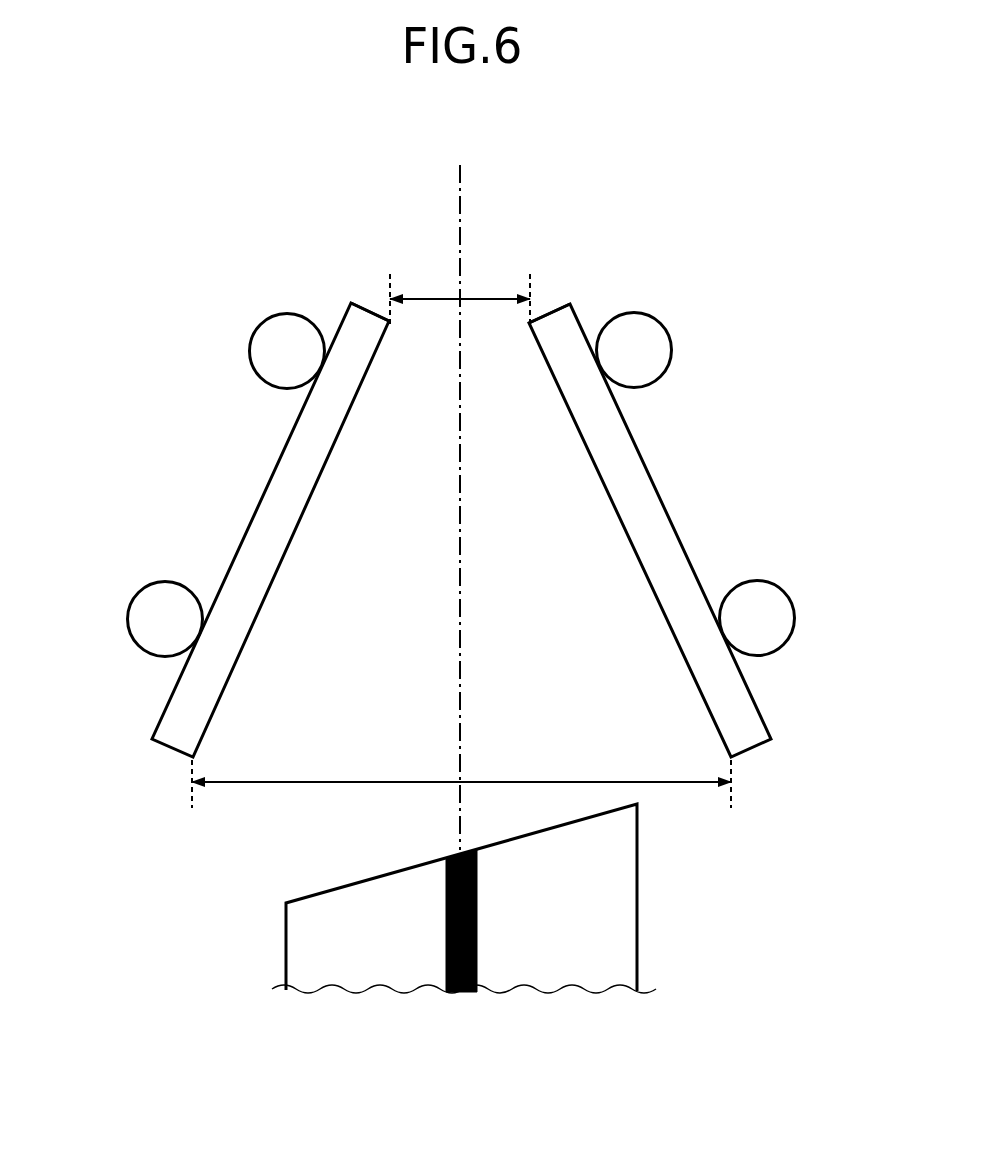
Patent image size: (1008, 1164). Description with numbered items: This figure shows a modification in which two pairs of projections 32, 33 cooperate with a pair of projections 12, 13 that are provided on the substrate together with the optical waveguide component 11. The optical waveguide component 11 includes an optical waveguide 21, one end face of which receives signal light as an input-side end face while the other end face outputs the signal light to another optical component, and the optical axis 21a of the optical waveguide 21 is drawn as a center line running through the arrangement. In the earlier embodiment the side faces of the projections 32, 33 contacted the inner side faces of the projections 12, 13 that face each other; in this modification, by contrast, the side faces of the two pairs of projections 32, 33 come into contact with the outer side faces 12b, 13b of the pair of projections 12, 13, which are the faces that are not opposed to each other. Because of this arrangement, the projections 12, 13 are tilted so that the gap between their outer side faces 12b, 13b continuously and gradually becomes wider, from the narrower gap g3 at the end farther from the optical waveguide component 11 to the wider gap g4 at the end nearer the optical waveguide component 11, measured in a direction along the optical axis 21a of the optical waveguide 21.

The optical waveguide component 11 is at (637, 853).
The optical waveguide 21 is at (477, 927).
The optical axis 21a is at (460, 197).
The projection 12 is at (663, 504).
The outer side face 12b is at (577, 313).
The projection 13 is at (260, 504).
The outer side face 13b is at (343, 311).
The pair of projections 32 is at (671, 348).
The pair of projections 33 is at (249, 349).
The gap g3 is at (478, 300).
The gap g4 is at (548, 781).